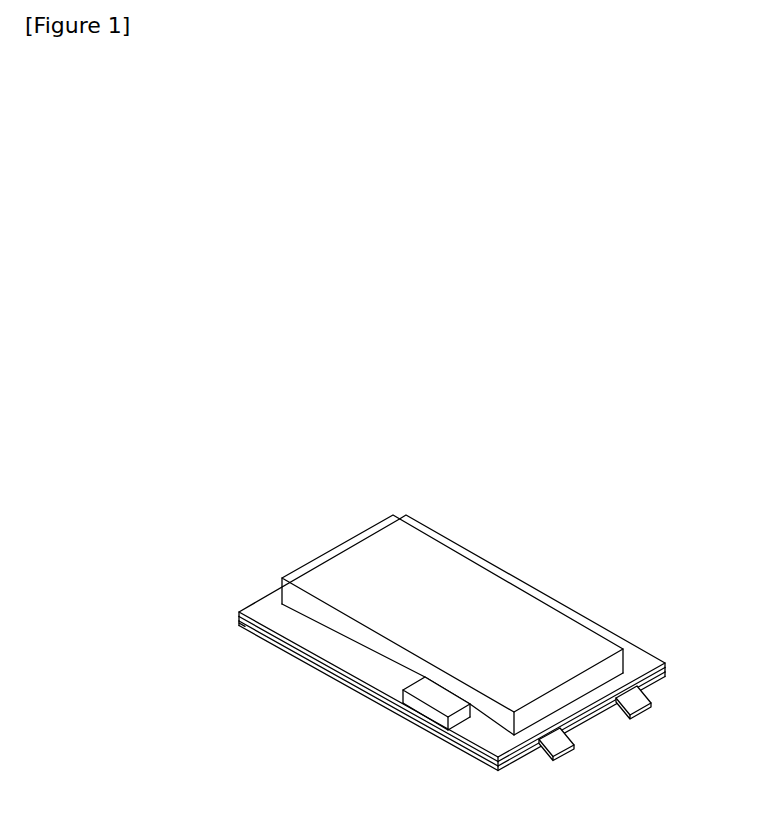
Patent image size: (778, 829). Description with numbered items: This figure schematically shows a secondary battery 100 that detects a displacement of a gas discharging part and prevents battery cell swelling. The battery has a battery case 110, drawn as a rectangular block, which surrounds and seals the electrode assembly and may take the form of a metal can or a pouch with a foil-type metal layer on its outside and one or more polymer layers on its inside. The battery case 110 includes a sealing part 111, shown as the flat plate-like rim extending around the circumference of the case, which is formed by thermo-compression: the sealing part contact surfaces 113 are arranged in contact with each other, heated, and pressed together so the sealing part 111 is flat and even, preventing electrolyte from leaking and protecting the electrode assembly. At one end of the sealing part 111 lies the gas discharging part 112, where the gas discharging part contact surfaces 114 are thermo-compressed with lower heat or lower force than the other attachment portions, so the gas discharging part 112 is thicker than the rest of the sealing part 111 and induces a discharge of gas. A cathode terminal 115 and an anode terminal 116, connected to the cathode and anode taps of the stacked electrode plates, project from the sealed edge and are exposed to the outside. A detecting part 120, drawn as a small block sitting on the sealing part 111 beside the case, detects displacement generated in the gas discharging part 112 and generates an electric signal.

The secondary battery 100 is at (507, 454).
The battery case 110 is at (518, 597).
The sealing part 111 is at (264, 612).
The gas discharging part 112 is at (402, 715).
The sealing part contact surfaces 113 is at (267, 631).
The gas discharging part contact surfaces 114 is at (418, 722).
The cathode terminal 115 is at (551, 753).
The anode terminal 116 is at (626, 708).
The detecting part 120 is at (441, 720).